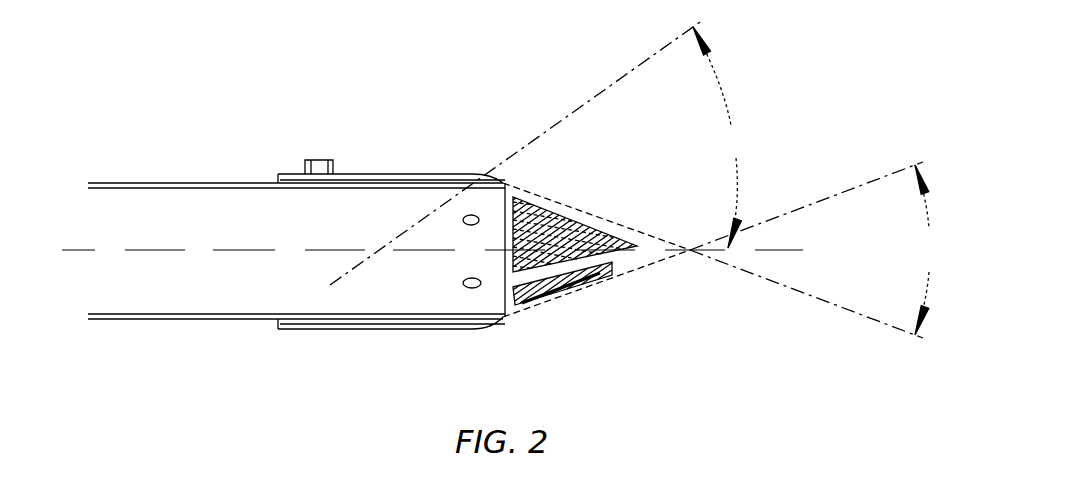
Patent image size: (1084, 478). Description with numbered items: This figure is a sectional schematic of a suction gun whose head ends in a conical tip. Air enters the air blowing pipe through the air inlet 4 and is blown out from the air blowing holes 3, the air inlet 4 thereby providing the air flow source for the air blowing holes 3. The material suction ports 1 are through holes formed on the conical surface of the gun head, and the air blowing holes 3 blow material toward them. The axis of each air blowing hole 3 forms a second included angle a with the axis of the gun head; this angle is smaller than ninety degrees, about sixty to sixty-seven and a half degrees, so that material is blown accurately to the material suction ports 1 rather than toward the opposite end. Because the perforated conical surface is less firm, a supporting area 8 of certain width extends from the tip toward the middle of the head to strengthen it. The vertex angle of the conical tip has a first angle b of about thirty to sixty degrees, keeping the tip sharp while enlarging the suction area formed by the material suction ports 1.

The material suction port 1 is at (550, 302).
The air blowing hole 3 is at (460, 290).
The air inlet 4 is at (333, 160).
The supporting area 8 is at (610, 263).
The second included angle a is at (535, 153).
The first angle b is at (814, 250).